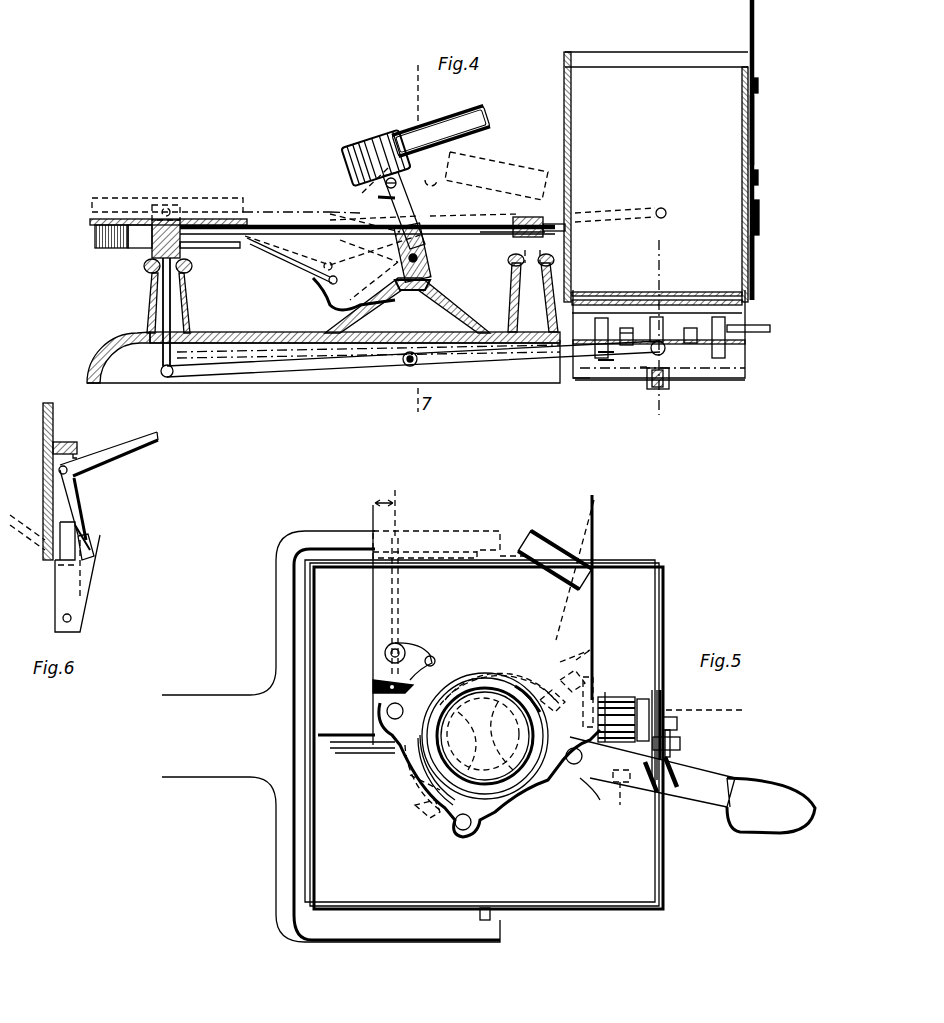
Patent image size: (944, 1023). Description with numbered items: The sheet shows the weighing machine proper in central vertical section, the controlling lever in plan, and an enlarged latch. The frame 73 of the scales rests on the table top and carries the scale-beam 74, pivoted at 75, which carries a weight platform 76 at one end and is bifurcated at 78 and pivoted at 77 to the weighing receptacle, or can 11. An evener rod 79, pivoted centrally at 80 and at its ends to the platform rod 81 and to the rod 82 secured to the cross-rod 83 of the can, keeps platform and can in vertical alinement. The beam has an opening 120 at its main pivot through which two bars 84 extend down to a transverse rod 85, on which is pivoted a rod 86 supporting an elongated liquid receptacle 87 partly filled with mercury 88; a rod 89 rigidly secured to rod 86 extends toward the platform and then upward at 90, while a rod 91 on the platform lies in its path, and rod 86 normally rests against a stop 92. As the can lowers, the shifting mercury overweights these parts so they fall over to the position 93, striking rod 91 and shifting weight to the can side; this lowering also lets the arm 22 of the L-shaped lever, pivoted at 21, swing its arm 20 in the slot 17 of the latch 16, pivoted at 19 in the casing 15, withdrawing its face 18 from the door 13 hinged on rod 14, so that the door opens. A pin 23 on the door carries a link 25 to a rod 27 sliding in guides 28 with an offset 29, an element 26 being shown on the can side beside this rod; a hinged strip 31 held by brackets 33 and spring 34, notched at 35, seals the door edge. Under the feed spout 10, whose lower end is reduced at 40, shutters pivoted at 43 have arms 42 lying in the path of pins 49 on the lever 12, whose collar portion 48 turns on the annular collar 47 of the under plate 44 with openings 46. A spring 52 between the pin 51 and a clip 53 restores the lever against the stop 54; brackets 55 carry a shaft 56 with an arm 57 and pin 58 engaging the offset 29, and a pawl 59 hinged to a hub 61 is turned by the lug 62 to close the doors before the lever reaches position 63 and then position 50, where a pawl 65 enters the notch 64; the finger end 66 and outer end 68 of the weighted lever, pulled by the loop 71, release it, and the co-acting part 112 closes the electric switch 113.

In FIG. 4, the feed spout 10 is at (660, 427).
In FIG. 4, the frame / casing wall 11 is at (713, 47).
In FIG. 6, the frame / casing wall 11 is at (58, 418).
In FIG. 5, the frame / casing wall 11 is at (670, 842).
In FIG. 5, the controlling lever 12 is at (723, 718).
In FIG. 4, the doors 13 is at (745, 312).
In FIG. 4, the rod 14 is at (745, 294).
In FIG. 4, the casing 15 is at (647, 384).
In FIG. 4, the latch 16 is at (672, 382).
In FIG. 6, the latch 16 is at (88, 584).
In FIG. 6, the slot 17 is at (95, 537).
In FIG. 6, the face 18 is at (92, 532).
In FIG. 6, the pivot 19 is at (78, 618).
In FIG. 6, the arm 20 is at (82, 488).
In FIG. 6, the pivot 21 is at (76, 458).
In FIG. 6, the arm 22 is at (158, 448).
In FIG. 4, the pin 23 is at (770, 330).
In FIG. 4, the link 25 is at (758, 247).
In FIG. 4, the block 26 is at (760, 212).
In FIG. 4, the rod 27 is at (758, 148).
In FIG. 4, the guides 28 is at (760, 87).
In FIG. 5, the guides 28 is at (662, 702).
In FIG. 5, the offset 29 is at (680, 732).
In FIG. 4, the strip 31 is at (748, 364).
In FIG. 4, the brackets 33 is at (630, 325).
In FIG. 4, the spring 34 is at (735, 350).
In FIG. 4, the notch 35 is at (640, 374).
In FIG. 5, the reduced portion 40 is at (400, 775).
In FIG. 5, the radial arms 42 is at (415, 817).
In FIG. 5, the pivot 43 is at (408, 790).
In FIG. 5, the under plate 44 is at (597, 630).
In FIG. 5, the openings 46 is at (450, 716).
In FIG. 5, the annular collar 47 is at (530, 778).
In FIG. 5, the collar portion 48 is at (510, 807).
In FIG. 5, the pins 49 is at (386, 712).
In FIG. 5, the dotted outline 50 is at (548, 627).
In FIG. 5, the pin 51 is at (458, 837).
In FIG. 5, the spring 52 is at (440, 817).
In FIG. 5, the clip 53 is at (590, 670).
In FIG. 5, the stop 54 is at (372, 688).
In FIG. 5, the brackets 55 is at (605, 697).
In FIG. 5, the shaft 56 is at (642, 697).
In FIG. 5, the arm 57 is at (668, 714).
In FIG. 5, the pin 58 is at (680, 750).
In FIG. 5, the pawl 59 is at (612, 692).
In FIG. 5, the hub 61 is at (580, 667).
In FIG. 5, the lug 62 is at (626, 797).
In FIG. 5, the dotted outline 63 is at (612, 697).
In FIG. 5, the notch 64 is at (512, 678).
In FIG. 5, the pawl 65 is at (418, 652).
In FIG. 5, the upper end of finger 66 is at (385, 657).
In FIG. 5, the outer end 68 is at (390, 594).
In FIG. 5, the loop 71 is at (420, 567).
In FIG. 4, the frame 73 is at (262, 332).
In FIG. 4, the scale-beam 74 is at (338, 224).
In FIG. 5, the scale-beam 74 is at (206, 749).
In FIG. 4, the pivot 75 is at (435, 218).
In FIG. 4, the weight platform 76 is at (95, 244).
In FIG. 4, the pivot 77 is at (666, 214).
In FIG. 5, the pivot 77 is at (492, 916).
In FIG. 4, the bifurcated end 78 is at (565, 218).
In FIG. 5, the bifurcated end 78 is at (400, 952).
In FIG. 4, the evener rod 79 is at (332, 368).
In FIG. 4, the pivot 80 is at (408, 368).
In FIG. 4, the rod 81 is at (163, 308).
In FIG. 4, the rod 82 is at (684, 347).
In FIG. 4, the cross-rod 83 is at (590, 312).
In FIG. 4, the bars 84 is at (430, 247).
In FIG. 4, the transverse rod 85 is at (430, 274).
In FIG. 4, the rod 86 is at (385, 188).
In FIG. 4, the liquid receptacle 87 is at (423, 120).
In FIG. 4, the mercury 88 is at (392, 138).
In FIG. 4, the rod 89 is at (375, 307).
In FIG. 4, the upturned arm 90 is at (318, 300).
In FIG. 4, the rod 91 is at (278, 270).
In FIG. 4, the stop 92 is at (363, 205).
In FIG. 4, the tipped position 93 is at (502, 164).
In FIG. 5, the co-acting part 112 is at (670, 797).
In FIG. 5, the electric switch 113 is at (570, 580).
In FIG. 4, the opening 120 is at (512, 213).